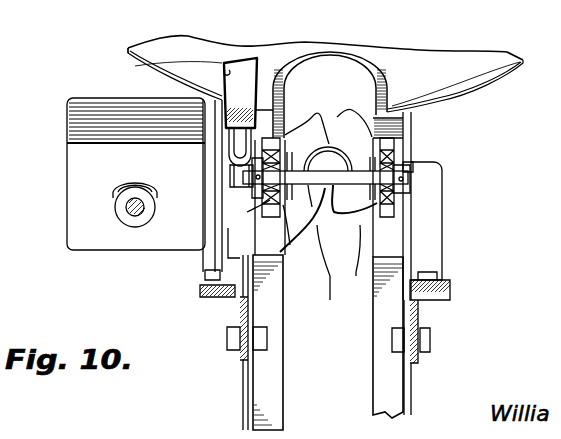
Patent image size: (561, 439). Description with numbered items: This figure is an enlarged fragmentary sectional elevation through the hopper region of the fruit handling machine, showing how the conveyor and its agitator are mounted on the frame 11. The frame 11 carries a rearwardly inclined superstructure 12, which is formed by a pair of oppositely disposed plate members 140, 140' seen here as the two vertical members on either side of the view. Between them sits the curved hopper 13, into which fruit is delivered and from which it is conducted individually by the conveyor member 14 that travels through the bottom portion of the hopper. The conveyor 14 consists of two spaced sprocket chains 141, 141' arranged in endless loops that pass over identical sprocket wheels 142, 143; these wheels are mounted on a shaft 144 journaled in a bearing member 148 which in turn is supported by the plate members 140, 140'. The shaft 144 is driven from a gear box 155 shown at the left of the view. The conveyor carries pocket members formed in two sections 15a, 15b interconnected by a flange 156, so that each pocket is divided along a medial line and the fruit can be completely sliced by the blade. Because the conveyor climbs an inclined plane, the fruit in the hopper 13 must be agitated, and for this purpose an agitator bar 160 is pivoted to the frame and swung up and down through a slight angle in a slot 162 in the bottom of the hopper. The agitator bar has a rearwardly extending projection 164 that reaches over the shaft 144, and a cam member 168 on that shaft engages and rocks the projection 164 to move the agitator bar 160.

The frame 11 is at (223, 32).
The superstructure 12 is at (416, 374).
The hopper 13 is at (432, 62).
The conveyor member 14 is at (328, 230).
The pocket member section 15a is at (313, 117).
The pocket member section 15b is at (348, 110).
The plate member 140 is at (234, 342).
The plate member 140' is at (423, 337).
The sprocket chain 141 is at (284, 251).
The sprocket chain 141' is at (355, 274).
The sprocket wheel 142 is at (255, 203).
The sprocket wheel 143 is at (413, 163).
The shaft 144 is at (336, 299).
The bearing member 148 is at (428, 202).
The gear box 155 is at (80, 162).
The flange 156 is at (328, 146).
The agitator bar 160 is at (243, 72).
The slot 162 is at (150, 68).
The projection 164 is at (238, 146).
The cam member 168 is at (240, 172).